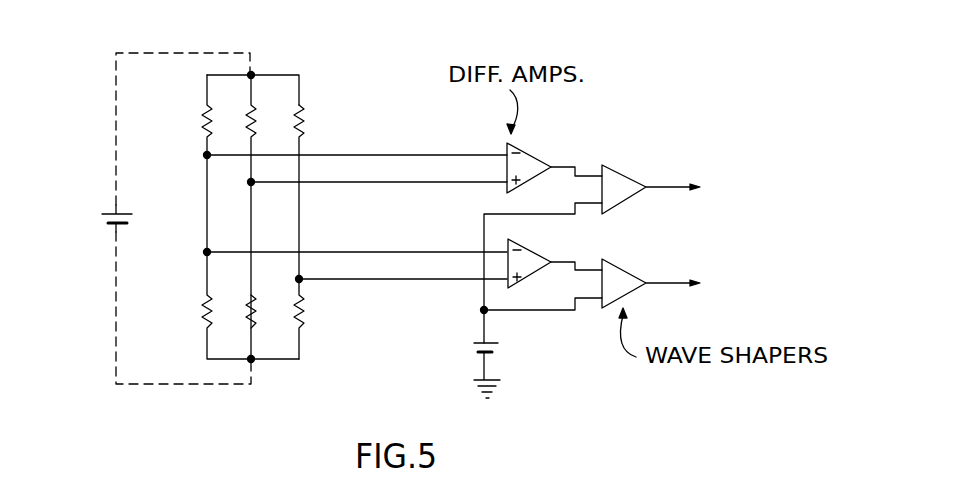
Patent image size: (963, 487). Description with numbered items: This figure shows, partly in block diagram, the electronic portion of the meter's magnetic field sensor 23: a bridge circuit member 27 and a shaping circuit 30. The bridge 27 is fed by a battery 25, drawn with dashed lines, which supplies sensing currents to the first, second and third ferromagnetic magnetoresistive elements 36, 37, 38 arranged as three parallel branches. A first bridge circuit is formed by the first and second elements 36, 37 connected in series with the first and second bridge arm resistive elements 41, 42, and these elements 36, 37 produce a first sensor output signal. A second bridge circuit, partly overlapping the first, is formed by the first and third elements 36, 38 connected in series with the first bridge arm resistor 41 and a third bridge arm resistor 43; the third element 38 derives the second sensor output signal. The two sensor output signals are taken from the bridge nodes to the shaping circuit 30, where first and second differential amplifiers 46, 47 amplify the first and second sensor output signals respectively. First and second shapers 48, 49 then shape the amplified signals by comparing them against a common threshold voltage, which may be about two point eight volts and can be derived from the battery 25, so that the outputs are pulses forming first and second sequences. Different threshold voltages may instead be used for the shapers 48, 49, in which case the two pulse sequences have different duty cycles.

The magnetic field sensor 23 is at (362, 226).
The battery 25 is at (100, 220).
The bridge circuit member 27 is at (304, 85).
The shaping circuit 30 is at (623, 123).
The first ferromagnetic magnetoresistive element 36 is at (202, 124).
The second ferromagnetic magnetoresistive element 37 is at (254, 113).
The third ferromagnetic magnetoresistive element 38 is at (304, 124).
The first bridge arm resistive element 41 is at (205, 314).
The second bridge arm resistive element 42 is at (256, 322).
The third bridge arm resistor 43 is at (304, 314).
The first differential amplifier 46 is at (529, 150).
The second differential amplifier 47 is at (535, 247).
The first shaper 48 is at (627, 177).
The second shaper 49 is at (627, 276).